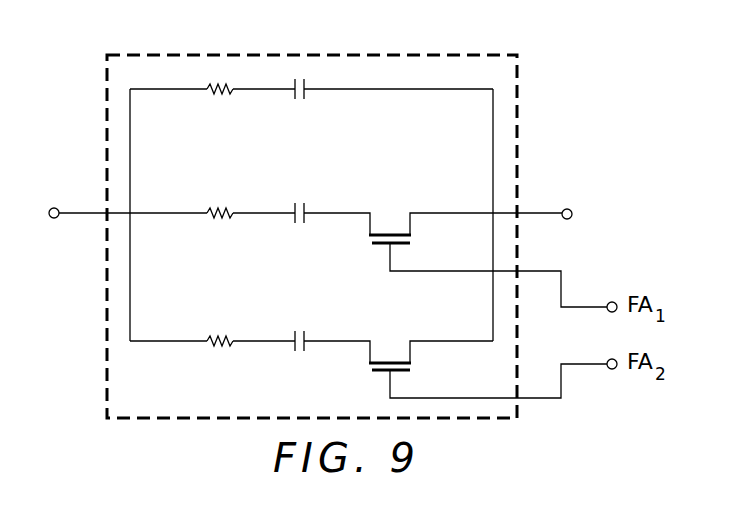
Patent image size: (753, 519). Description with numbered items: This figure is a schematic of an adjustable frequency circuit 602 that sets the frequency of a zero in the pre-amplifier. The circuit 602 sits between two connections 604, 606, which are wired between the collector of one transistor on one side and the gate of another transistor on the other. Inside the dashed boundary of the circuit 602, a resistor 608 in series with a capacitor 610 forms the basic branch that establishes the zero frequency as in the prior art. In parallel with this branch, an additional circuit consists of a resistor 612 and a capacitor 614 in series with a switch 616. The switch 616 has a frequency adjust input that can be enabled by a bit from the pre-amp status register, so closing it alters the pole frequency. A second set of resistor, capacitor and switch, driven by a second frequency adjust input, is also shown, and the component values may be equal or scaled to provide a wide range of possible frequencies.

The adjustable frequency circuit 602 is at (103, 311).
The connection 604 is at (538, 212).
The connection 606 is at (83, 212).
The resistor 608 is at (217, 95).
The capacitor 610 is at (300, 100).
The resistor 612 is at (215, 220).
The capacitor 614 is at (297, 224).
The switch 616 is at (379, 247).